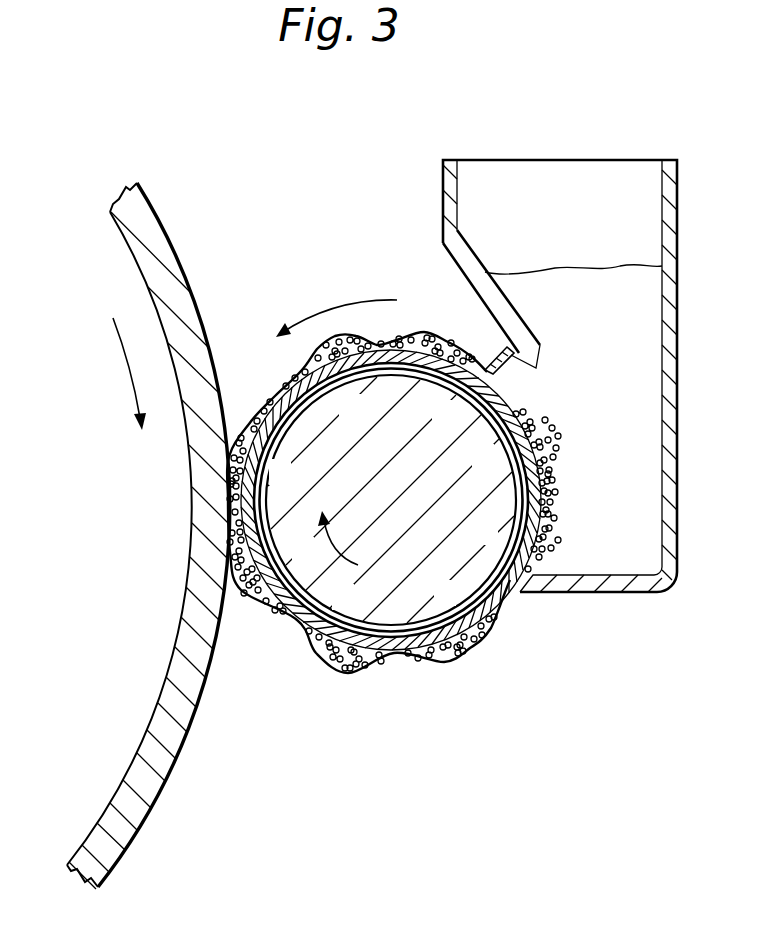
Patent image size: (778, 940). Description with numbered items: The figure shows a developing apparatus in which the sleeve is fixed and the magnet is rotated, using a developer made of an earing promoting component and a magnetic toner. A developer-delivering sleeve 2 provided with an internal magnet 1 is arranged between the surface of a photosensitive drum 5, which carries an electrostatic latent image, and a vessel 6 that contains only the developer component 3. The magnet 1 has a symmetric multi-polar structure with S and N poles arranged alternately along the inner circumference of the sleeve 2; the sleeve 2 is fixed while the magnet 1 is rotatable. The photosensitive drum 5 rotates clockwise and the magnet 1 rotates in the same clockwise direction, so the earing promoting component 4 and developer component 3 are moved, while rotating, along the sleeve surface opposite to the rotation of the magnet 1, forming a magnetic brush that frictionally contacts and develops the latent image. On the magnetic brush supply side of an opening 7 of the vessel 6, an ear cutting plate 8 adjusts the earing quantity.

The magnet 1 is at (410, 626).
The developer-delivering sleeve 2 is at (490, 614).
The developer component 3 is at (320, 665).
The earing promoting component 4 is at (347, 666).
The photosensitive drum 5 is at (165, 232).
The vessel 6 is at (670, 223).
The opening 7 is at (553, 520).
The ear cutting plate 8 is at (501, 360).